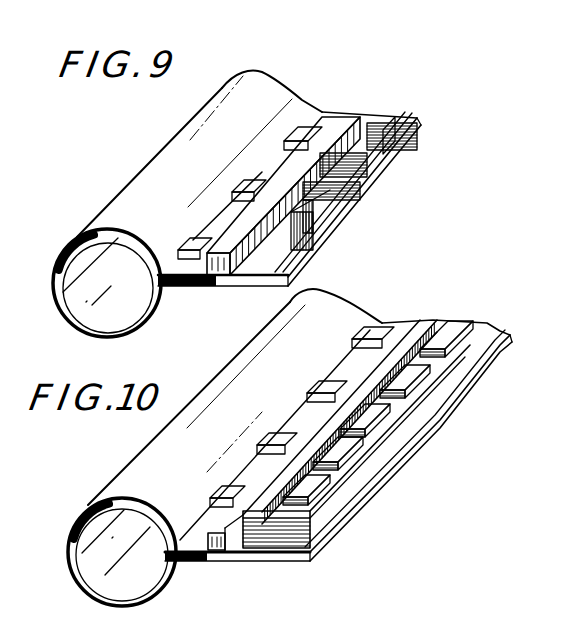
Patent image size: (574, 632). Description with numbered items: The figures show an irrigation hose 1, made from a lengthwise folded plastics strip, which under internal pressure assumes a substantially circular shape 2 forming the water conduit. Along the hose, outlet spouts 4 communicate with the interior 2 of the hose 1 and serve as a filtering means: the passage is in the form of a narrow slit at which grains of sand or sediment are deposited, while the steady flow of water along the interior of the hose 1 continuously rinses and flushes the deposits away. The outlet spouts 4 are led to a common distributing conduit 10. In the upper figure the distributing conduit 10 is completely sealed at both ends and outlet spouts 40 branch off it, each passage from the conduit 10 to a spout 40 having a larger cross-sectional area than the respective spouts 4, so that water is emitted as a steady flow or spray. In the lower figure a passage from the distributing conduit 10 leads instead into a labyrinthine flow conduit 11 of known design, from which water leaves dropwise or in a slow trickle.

In FIG. 9, the hose 1 is at (283, 90).
In FIG. 10, the hose 1 is at (357, 318).
In FIG. 9, the conduit of substantially circular shape 2 is at (62, 274).
In FIG. 10, the conduit of substantially circular shape 2 is at (74, 548).
In FIG. 9, the outlet spout 4 is at (290, 128).
In FIG. 10, the outlet spout 4 is at (358, 344).
In FIG. 9, the distributing conduit 10 is at (217, 276).
In FIG. 10, the distributing conduit 10 is at (218, 552).
In FIG. 10, the labyrinthine flow conduit 11 is at (317, 512).
In FIG. 9, the outlet spout 40 is at (405, 138).